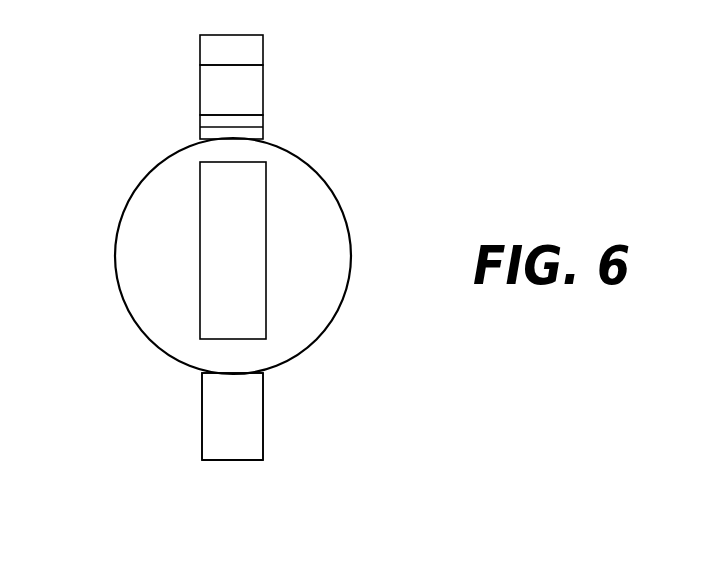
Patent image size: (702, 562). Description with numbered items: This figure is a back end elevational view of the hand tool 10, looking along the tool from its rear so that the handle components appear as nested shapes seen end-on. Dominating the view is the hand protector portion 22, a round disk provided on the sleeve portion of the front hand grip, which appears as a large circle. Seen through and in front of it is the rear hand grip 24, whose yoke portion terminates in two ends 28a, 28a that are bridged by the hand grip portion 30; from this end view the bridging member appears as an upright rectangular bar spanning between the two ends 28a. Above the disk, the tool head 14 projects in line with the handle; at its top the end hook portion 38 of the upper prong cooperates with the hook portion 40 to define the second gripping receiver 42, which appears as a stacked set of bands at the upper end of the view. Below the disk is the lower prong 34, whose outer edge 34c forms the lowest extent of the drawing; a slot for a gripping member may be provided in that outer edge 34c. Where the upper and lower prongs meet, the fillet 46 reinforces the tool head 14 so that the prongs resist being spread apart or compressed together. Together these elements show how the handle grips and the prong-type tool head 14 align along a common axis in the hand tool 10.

The hand tool 10 is at (125, 461).
The tool head 14 is at (288, 422).
The hand protector portion 22 is at (129, 194).
The rear hand grip 24 is at (283, 261).
The end of yoke portion 28a is at (267, 178).
The hand grip portion 30 is at (257, 240).
The lower prong 34 is at (202, 410).
The outer edge of lower prong 34c is at (263, 452).
The end hook portion 38 is at (263, 38).
The hook portion 40 is at (263, 133).
The second gripping receiver 42 is at (206, 88).
The fillet 46 is at (263, 373).